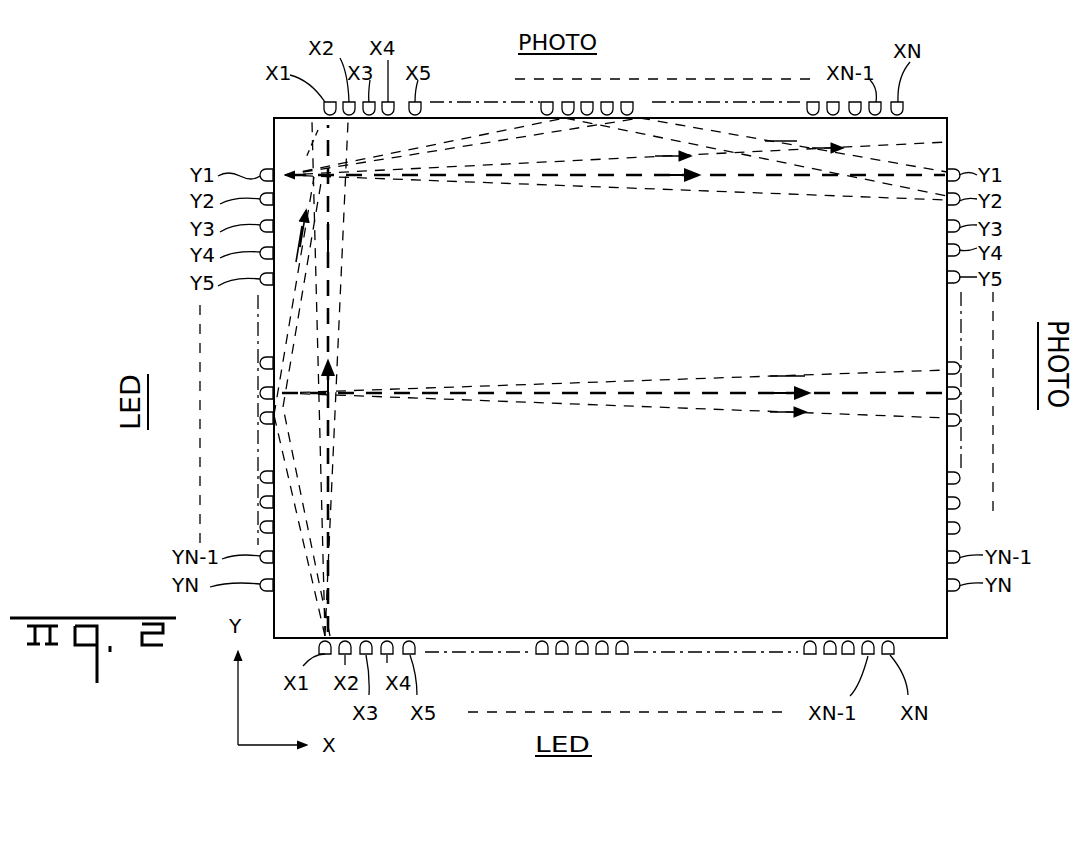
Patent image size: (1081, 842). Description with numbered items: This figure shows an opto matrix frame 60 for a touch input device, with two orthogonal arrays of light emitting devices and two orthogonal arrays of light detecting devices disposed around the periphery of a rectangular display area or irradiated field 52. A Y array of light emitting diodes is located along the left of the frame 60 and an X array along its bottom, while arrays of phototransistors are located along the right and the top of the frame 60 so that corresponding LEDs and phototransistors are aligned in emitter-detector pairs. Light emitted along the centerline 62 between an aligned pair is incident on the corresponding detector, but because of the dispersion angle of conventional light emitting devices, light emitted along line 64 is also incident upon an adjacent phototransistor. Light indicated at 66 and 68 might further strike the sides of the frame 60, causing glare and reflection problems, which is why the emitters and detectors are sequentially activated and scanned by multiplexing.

The irradiated field 52 is at (935, 158).
The frame 60 is at (270, 116).
The centerline 62 is at (586, 177).
The line 64 is at (560, 164).
The light 66 is at (494, 135).
The light 68 is at (402, 142).